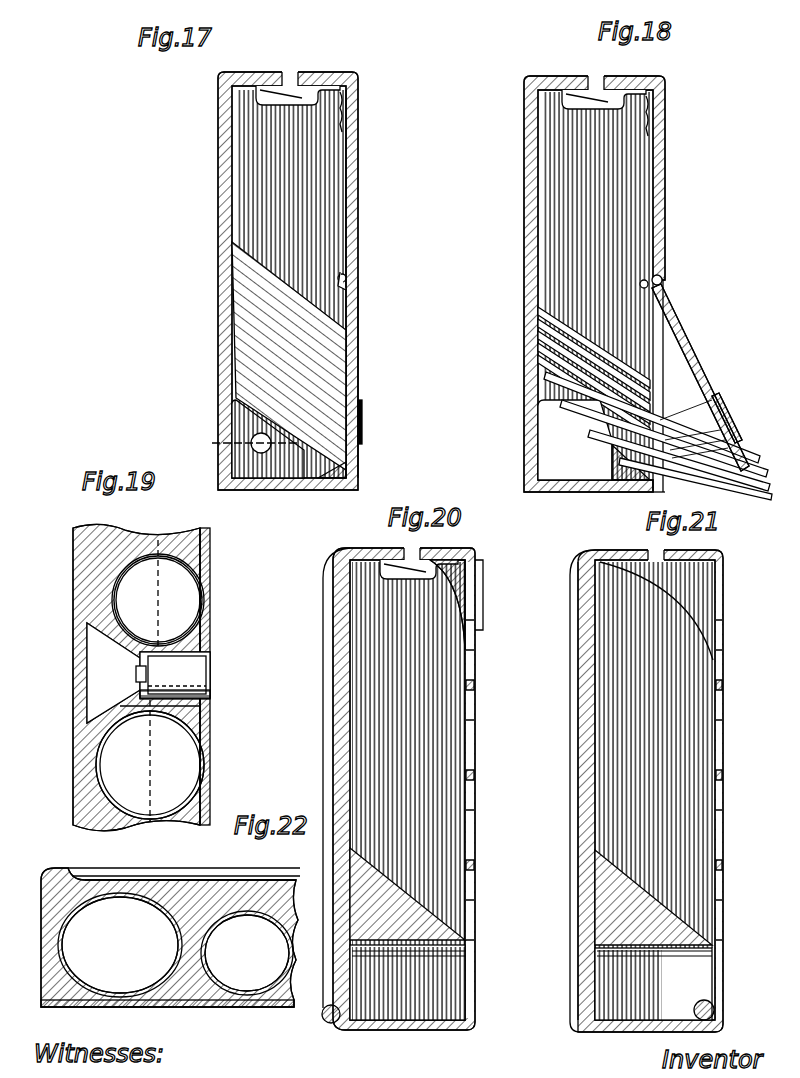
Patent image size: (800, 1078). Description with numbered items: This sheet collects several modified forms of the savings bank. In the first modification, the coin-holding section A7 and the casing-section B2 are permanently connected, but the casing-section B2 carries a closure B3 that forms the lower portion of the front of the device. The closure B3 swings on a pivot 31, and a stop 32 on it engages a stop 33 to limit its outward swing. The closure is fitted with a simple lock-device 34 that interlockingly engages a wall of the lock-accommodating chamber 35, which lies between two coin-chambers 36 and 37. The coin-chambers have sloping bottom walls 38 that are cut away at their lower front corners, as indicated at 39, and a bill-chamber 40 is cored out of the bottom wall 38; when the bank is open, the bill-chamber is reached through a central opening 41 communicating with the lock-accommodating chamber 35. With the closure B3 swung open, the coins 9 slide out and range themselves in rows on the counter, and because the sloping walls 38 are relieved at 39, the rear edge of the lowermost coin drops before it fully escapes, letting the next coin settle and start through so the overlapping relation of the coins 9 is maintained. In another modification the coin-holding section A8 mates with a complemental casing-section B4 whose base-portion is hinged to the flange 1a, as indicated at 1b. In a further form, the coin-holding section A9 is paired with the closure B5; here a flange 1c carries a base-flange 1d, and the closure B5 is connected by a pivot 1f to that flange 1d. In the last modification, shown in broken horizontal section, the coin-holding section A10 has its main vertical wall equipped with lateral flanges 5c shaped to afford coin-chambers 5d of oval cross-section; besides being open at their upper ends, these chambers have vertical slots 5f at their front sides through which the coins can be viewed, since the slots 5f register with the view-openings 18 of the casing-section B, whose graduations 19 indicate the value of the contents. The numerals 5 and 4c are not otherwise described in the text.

In FIG. 17, the coin-holding section A7 is at (218, 268).
In FIG. 18, the coin-holding section A7 is at (524, 194).
In FIG. 19, the coin-holding section A7 is at (73, 700).
In FIG. 20, the coin-holding section A8 is at (340, 622).
In FIG. 21, the coin-holding section A9 is at (578, 802).
In FIG. 22, the coin-holding section A10 is at (76, 868).
In FIG. 17, the casing-section B2 is at (358, 215).
In FIG. 18, the casing-section B2 is at (665, 184).
In FIG. 17, the closure B3 is at (358, 322).
In FIG. 18, the closure B3 is at (704, 366).
In FIG. 19, the closure B3 is at (234, 764).
In FIG. 20, the casing-section B4 is at (475, 970).
In FIG. 21, the closure B5 is at (723, 778).
In FIG. 22, the casing-section B is at (152, 1008).
In FIG. 17, the cigarettes 9 is at (346, 345).
In FIG. 18, the cigarettes 9 is at (752, 484).
In FIG. 19, the cigarettes 9 is at (186, 616).
In FIG. 22, the cigarettes 9 is at (175, 945).
In FIG. 22, the perforations 18 is at (120, 1000).
In FIG. 17, the graduations 19 is at (386, 428).
In FIG. 17, the pivot 31 is at (347, 286).
In FIG. 18, the pivot 31 is at (664, 288).
In FIG. 17, the stop 32 is at (348, 270).
In FIG. 18, the stop 32 is at (656, 268).
In FIG. 17, the stop 33 is at (348, 280).
In FIG. 18, the stop 33 is at (660, 280).
In FIG. 17, the lock-device 34 is at (362, 415).
In FIG. 18, the lock-device 34 is at (742, 418).
In FIG. 19, the lock-device 34 is at (212, 664).
In FIG. 19, the lock-accommodating chamber 35 is at (206, 692).
In FIG. 19, the coin-chamber 36 is at (192, 722).
In FIG. 19, the coin-chamber 37 is at (196, 566).
In FIG. 17, the sloping bottom wall 38 is at (250, 390).
In FIG. 18, the sloping bottom wall 38 is at (528, 392).
In FIG. 19, the sloping bottom wall 38 is at (120, 572).
In FIG. 17, the cut-away recess 39 is at (332, 466).
In FIG. 18, the cut-away recess 39 is at (618, 482).
In FIG. 17, the bill-chamber 40 is at (235, 418).
In FIG. 18, the bill-chamber 40 is at (575, 440).
In FIG. 19, the bill-chamber 40 is at (85, 585).
In FIG. 19, the central opening 41 is at (95, 660).
In FIG. 20, the flange 1a is at (356, 990).
In FIG. 20, the hinge 1b is at (332, 1024).
In FIG. 21, the flange 1c is at (653, 984).
In FIG. 21, the base-flange 1d is at (634, 1020).
In FIG. 21, the pivot 1f is at (700, 1000).
In FIG. 22, the lip 4c is at (140, 880).
In FIG. 22, the wall 5 is at (297, 931).
In FIG. 22, the lateral flanges 5c is at (207, 956).
In FIG. 22, the coin-chambers 5d is at (290, 922).
In FIG. 22, the vertical slots 5f is at (136, 1000).